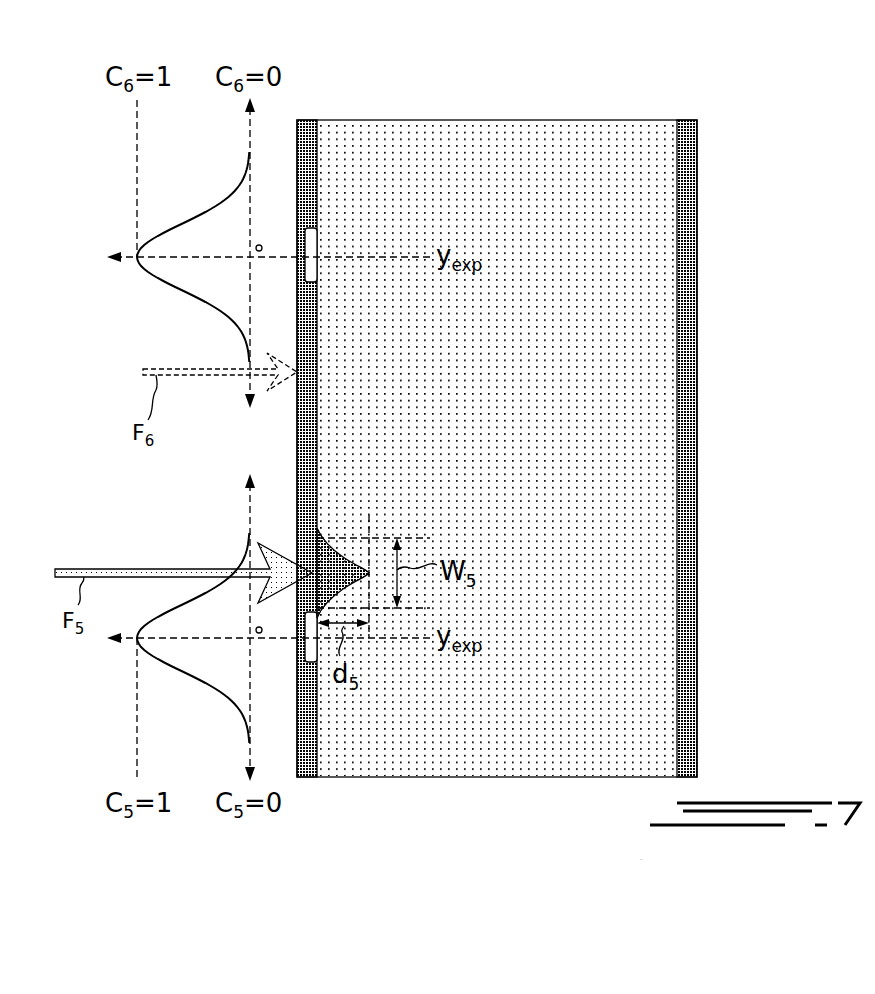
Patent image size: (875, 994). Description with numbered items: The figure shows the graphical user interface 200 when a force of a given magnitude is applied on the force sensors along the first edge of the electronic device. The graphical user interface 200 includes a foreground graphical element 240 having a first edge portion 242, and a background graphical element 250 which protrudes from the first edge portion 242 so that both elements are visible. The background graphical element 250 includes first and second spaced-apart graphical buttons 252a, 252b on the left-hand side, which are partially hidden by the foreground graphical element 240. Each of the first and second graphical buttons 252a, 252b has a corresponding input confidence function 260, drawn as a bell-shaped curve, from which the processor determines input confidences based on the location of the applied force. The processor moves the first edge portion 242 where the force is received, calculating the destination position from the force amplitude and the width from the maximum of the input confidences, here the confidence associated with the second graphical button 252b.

The graphical user interface 200 is at (519, 120).
The foreground graphical element 240 is at (433, 140).
The background graphical element 250 is at (312, 120).
The first graphical button 252a is at (305, 233).
The second graphical button 252b is at (305, 662).
The first edge portion 242 is at (342, 555).
The input confidence functions 260 is at (160, 228).